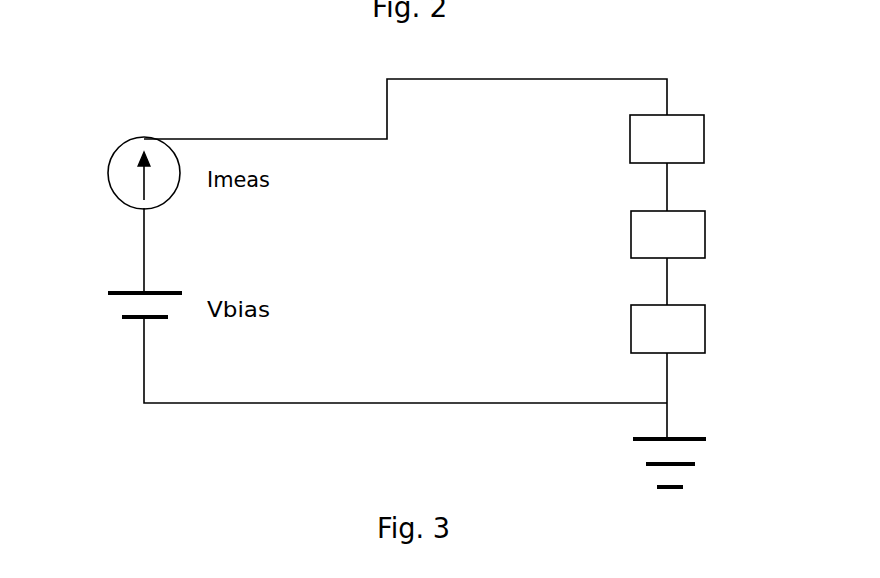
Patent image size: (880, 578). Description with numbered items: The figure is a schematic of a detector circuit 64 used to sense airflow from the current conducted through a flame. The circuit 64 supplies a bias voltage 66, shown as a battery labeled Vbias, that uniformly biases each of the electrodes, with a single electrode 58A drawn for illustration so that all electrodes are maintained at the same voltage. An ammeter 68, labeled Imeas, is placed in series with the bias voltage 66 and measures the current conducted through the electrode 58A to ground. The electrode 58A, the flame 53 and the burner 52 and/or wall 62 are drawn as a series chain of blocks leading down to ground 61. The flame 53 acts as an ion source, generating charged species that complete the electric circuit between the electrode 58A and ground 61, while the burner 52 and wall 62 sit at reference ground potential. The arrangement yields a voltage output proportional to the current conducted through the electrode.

The detector circuit 64 is at (585, 65).
The ammeter 68 is at (142, 137).
The bias voltage 66 is at (132, 292).
The electrode 58A is at (687, 148).
The flame 53 is at (672, 246).
The wall 62 is at (668, 329).
The burner 52 is at (695, 336).
The ground 61 is at (697, 466).